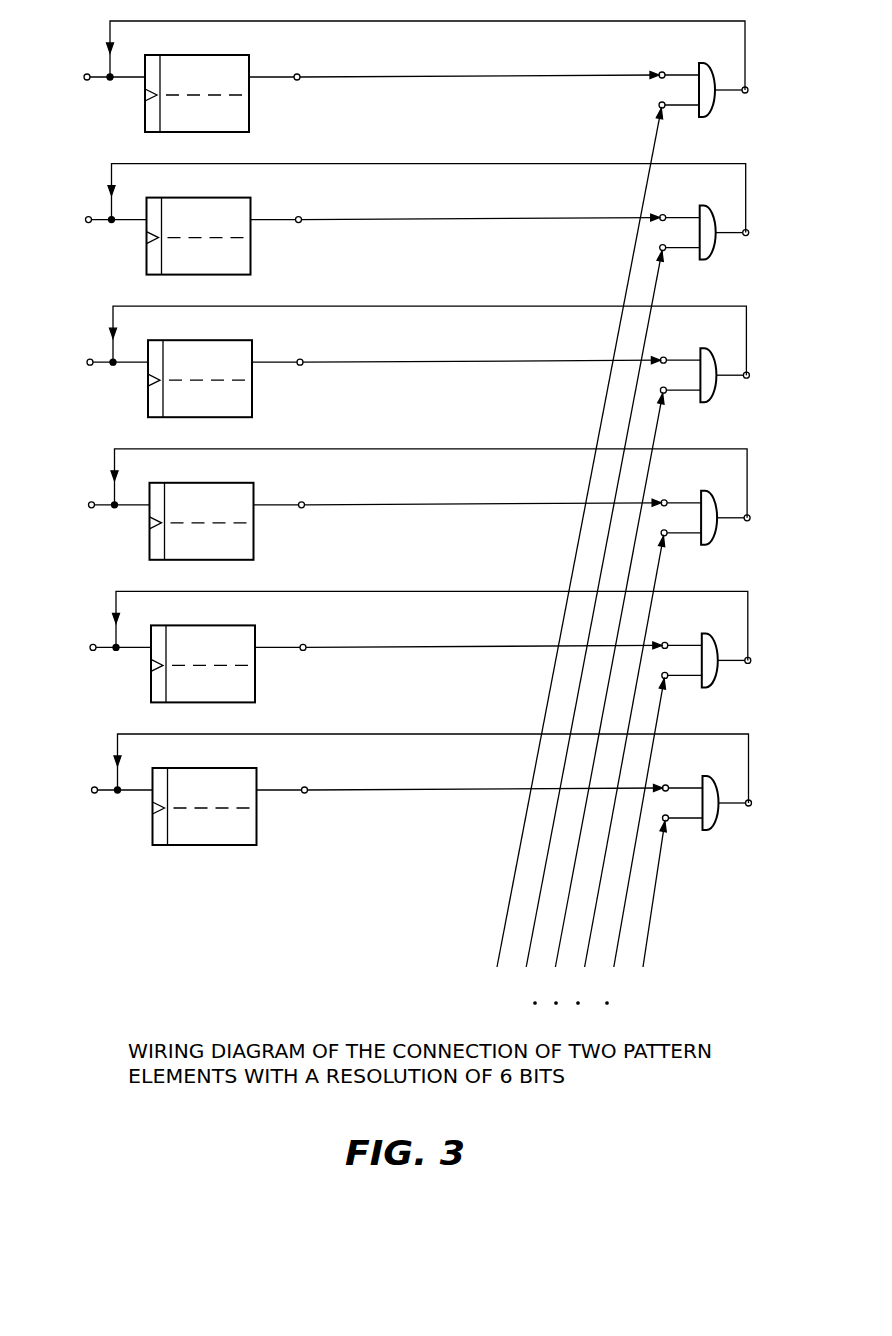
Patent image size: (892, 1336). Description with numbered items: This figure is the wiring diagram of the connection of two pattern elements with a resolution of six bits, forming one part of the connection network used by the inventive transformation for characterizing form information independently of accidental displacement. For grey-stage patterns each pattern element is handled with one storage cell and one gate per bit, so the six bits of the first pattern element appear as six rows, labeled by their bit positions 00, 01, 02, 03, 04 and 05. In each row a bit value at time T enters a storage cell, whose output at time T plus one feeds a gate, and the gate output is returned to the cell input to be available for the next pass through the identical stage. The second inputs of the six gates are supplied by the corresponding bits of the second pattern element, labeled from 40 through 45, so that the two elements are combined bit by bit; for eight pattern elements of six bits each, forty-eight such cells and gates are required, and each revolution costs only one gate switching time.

The pattern element bit X00 register and AND gate 00 is at (395, 76).
The pattern element bit X01 register and AND gate 01 is at (396, 565).
The pattern element bit X02 register and AND gate 02 is at (397, 636).
The pattern element bit X03 register and AND gate 03 is at (399, 708).
The pattern element bit X04 register and AND gate 04 is at (399, 779).
The pattern element bit X05 register and AND gate 05 is at (401, 789).
The input X40(T+1) connection line 40 is at (569, 561).
The input X45(T+1) connection line 45 is at (660, 918).